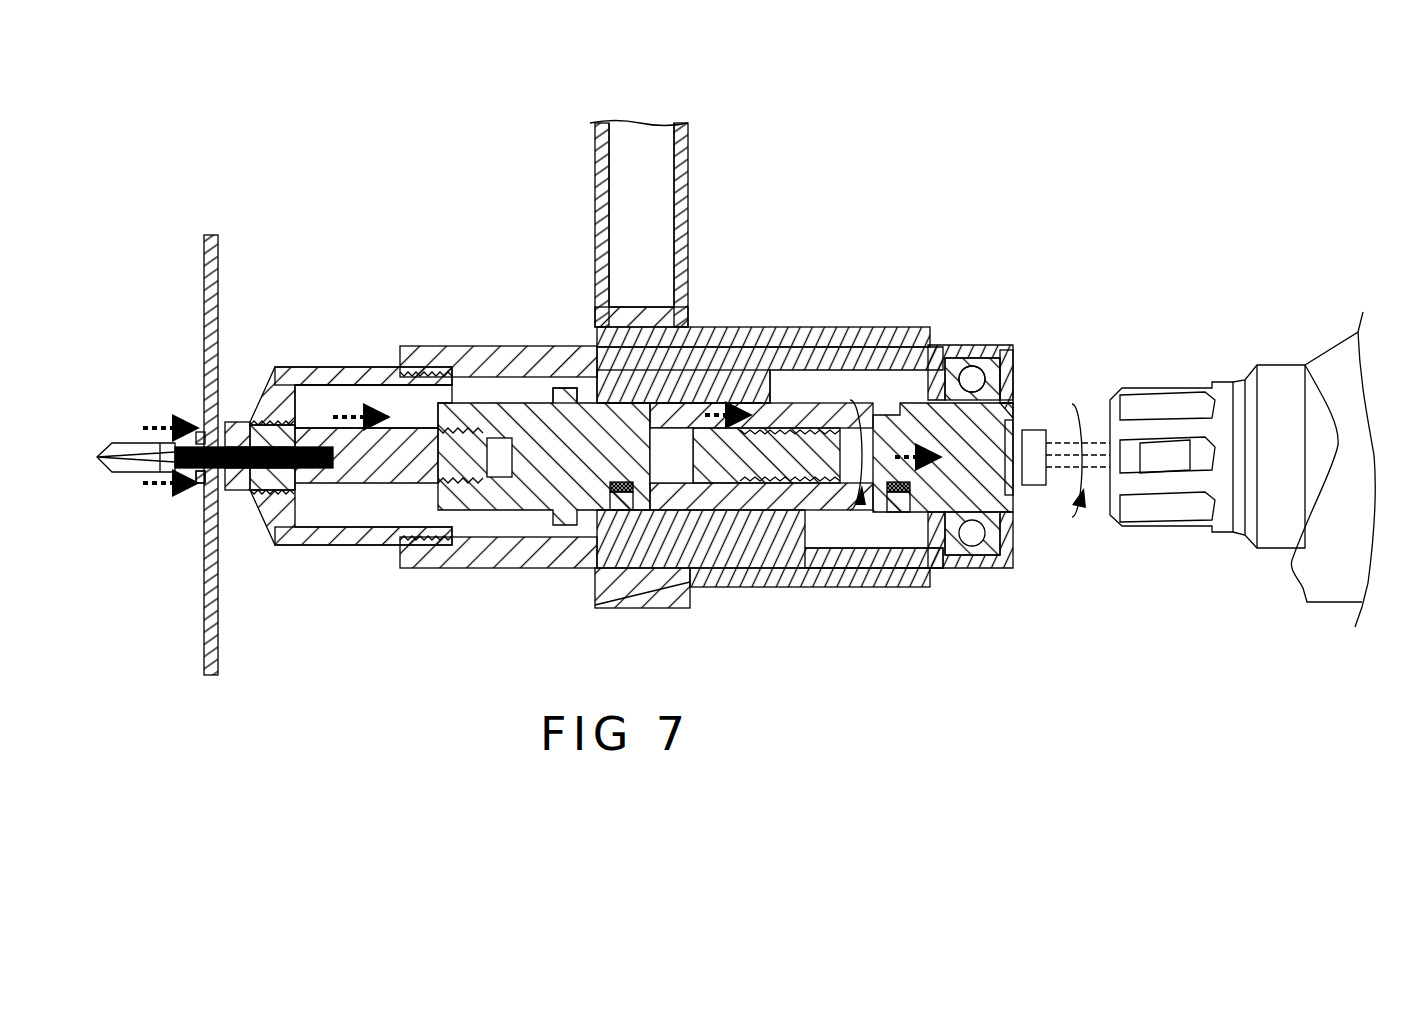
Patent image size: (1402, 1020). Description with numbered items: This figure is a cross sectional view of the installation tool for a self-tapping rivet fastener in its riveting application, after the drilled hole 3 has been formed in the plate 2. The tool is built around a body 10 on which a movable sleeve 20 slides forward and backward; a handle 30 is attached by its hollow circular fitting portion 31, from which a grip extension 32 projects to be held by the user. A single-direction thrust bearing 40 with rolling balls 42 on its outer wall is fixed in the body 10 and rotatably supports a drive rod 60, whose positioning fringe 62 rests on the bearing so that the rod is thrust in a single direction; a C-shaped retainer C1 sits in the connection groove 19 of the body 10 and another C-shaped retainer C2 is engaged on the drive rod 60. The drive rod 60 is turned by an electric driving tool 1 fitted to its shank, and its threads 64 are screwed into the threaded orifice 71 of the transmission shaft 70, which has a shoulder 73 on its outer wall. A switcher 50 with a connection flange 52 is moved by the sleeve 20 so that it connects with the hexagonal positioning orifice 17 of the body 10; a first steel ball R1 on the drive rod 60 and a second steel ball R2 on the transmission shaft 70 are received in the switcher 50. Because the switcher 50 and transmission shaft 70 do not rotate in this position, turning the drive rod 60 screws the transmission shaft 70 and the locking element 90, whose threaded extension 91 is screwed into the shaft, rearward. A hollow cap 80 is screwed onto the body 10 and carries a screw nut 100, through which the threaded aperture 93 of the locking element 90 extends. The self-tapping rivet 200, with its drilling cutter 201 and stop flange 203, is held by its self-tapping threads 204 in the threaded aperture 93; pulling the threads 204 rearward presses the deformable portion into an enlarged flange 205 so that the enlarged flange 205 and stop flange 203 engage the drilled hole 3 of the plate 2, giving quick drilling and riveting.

The electric driving tool 1 is at (1275, 375).
The plate 2 is at (218, 250).
The drilled hole 3 is at (200, 432).
The body 10 is at (444, 350).
The positioning orifice 17 is at (495, 478).
The connection groove 19 is at (1000, 348).
The movable sleeve 20 is at (878, 327).
The handle 30 is at (578, 212).
The fitting portion 31 is at (650, 608).
The grip extension 32 is at (681, 177).
The single-direction thrust bearing 40 is at (984, 570).
The rolling balls 42 is at (965, 355).
The switcher 50 is at (738, 548).
The connection flange 52 is at (762, 345).
The drive rod 60 is at (1000, 415).
The positioning fringe 62 is at (1013, 522).
The threads 64 is at (805, 548).
The transmission shaft 70 is at (520, 420).
The threaded orifice 71 is at (818, 400).
The shoulder 73 is at (565, 388).
The cap 80 is at (355, 372).
The locking element 90 is at (353, 500).
The threaded extension 91 is at (440, 520).
The threaded aperture 93 is at (318, 395).
The screw nut 100 is at (238, 492).
The self-tapping rivet 200 is at (127, 412).
The drilling cutter 201 is at (102, 450).
The stop flange 203 is at (258, 425).
The self-tapping threads 204 is at (278, 498).
The enlarged flange 205 is at (200, 490).
The C-shaped retainer C1 is at (1013, 372).
The C-shaped retainer C2 is at (958, 358).
The first steel ball R1 is at (880, 500).
The second steel ball R2 is at (612, 510).